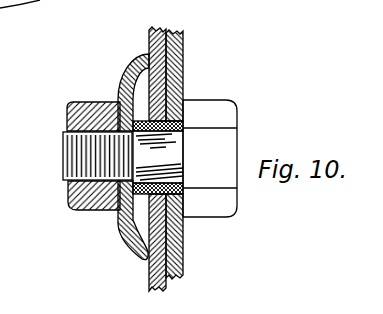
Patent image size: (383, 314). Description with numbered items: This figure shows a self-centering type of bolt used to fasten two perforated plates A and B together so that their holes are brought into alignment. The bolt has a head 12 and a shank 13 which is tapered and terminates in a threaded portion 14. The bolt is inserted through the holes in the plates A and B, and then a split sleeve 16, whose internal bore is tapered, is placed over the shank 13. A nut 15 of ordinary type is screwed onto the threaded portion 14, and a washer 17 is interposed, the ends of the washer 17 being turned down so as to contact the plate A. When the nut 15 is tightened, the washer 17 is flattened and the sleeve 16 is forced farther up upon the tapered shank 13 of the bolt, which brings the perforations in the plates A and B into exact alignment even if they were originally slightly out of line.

The plate A is at (150, 40).
The plate B is at (183, 53).
The head 12 is at (221, 148).
The shank 13 is at (172, 149).
The threaded portion 14 is at (63, 145).
The nut 15 is at (72, 211).
The split sleeve 16 is at (170, 194).
The washer 17 is at (120, 250).